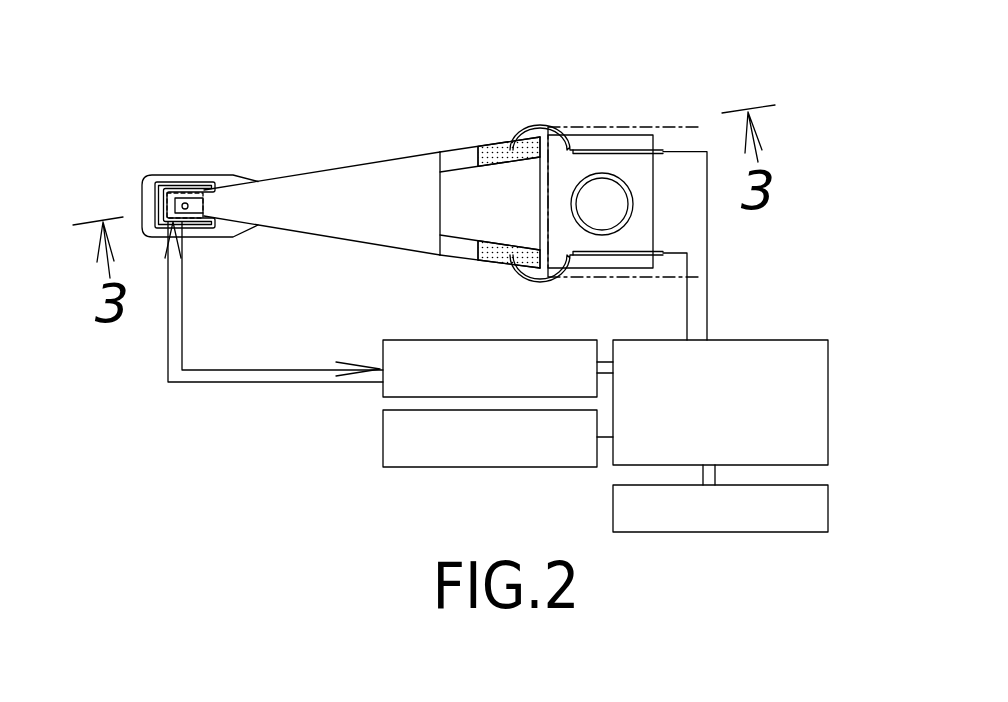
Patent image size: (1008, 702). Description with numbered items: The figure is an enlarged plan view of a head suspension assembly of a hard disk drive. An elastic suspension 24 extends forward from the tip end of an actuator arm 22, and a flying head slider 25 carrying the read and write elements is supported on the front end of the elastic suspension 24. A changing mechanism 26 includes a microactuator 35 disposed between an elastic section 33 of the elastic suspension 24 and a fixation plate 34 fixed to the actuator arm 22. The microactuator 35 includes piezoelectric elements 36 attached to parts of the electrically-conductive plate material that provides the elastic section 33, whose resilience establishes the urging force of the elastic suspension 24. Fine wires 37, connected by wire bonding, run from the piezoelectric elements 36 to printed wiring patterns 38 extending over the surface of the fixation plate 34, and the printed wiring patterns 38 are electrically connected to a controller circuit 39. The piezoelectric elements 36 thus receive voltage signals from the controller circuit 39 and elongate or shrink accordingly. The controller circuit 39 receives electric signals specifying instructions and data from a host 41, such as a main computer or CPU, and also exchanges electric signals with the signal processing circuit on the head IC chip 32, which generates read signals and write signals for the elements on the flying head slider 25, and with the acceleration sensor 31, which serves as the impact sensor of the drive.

The actuator arm 22 is at (687, 127).
The elastic suspension 24 is at (340, 168).
The flying head slider 25 is at (180, 190).
The changing mechanism 26 is at (490, 95).
The acceleration sensor 31 is at (383, 447).
The head IC chip 32 is at (383, 388).
The elastic section 33 is at (450, 153).
The fixation plate 34 is at (572, 128).
The microactuator 35 is at (483, 135).
The piezoelectric elements 36 is at (492, 165).
The fine wires 37 is at (530, 128).
The printed wiring patterns 38 is at (620, 150).
The controller circuit 39 is at (828, 436).
The host 41 is at (828, 519).